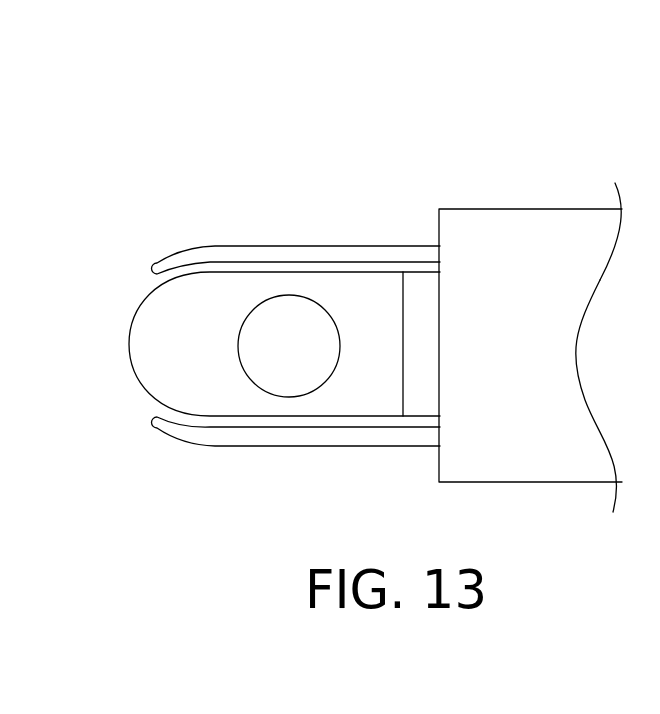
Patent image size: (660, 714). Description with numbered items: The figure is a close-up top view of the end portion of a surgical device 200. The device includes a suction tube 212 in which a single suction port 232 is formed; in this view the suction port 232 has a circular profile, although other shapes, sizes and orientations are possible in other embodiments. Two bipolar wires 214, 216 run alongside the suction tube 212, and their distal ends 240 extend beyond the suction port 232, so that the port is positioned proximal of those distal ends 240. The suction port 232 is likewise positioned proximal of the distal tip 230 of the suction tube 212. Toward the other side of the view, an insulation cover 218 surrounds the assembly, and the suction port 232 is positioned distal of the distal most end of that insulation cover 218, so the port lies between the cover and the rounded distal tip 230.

The surgical device 200 is at (498, 135).
The suction tube 212 is at (118, 403).
The bipolar wire 214 is at (260, 246).
The bipolar wire 216 is at (250, 448).
The insulation cover 218 is at (557, 209).
The distal tip 230 is at (131, 342).
The suction port 232 is at (318, 354).
The distal ends 240 is at (160, 268).